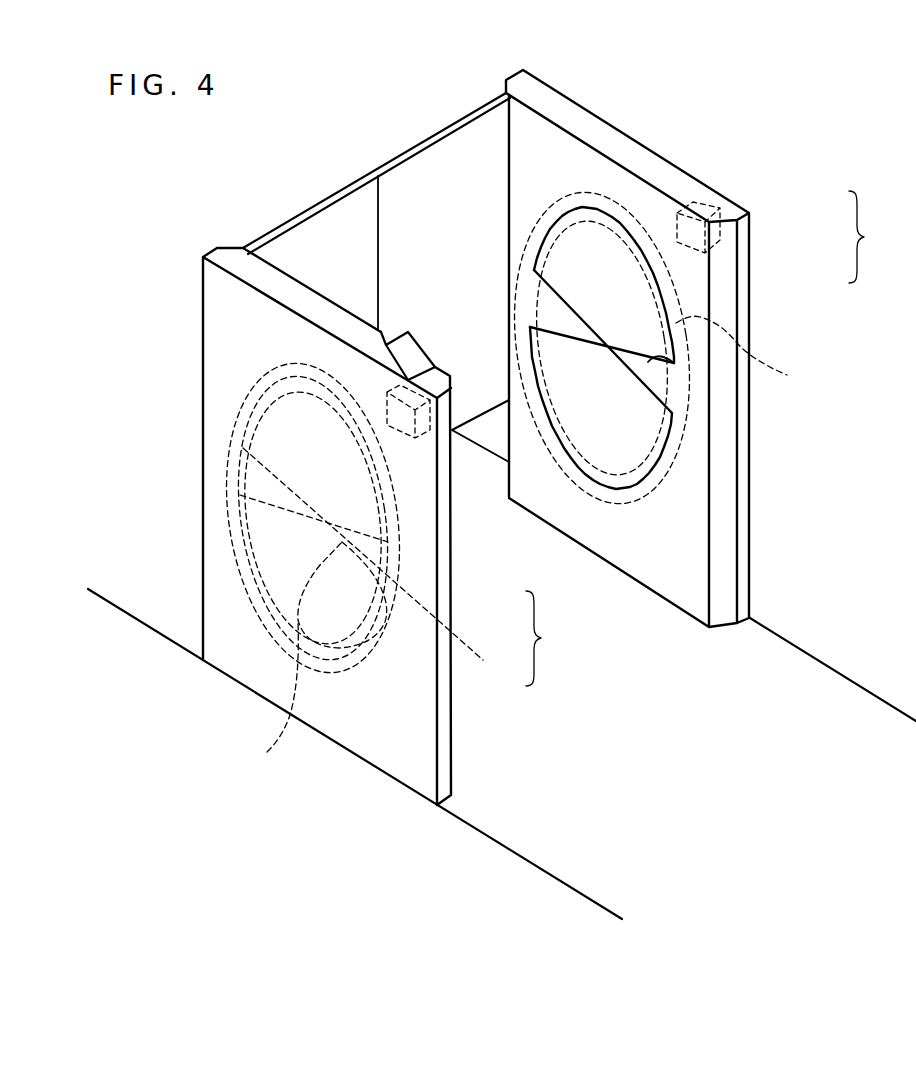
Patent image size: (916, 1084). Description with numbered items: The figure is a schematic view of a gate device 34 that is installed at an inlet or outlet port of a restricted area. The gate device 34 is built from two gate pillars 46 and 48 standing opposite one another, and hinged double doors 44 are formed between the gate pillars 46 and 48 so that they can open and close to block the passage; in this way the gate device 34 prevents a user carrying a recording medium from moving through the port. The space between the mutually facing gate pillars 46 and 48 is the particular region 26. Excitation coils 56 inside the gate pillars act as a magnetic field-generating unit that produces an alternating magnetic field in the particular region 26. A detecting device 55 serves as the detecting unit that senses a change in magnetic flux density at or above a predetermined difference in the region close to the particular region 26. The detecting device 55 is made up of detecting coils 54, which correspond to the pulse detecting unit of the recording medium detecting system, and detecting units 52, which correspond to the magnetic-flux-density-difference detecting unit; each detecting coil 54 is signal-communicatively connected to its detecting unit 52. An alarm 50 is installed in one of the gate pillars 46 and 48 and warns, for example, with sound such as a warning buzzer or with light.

The particular region 26 is at (622, 612).
The gate device 34 is at (482, 437).
The hinged double doors 44 is at (352, 220).
The gate pillar 46 is at (223, 357).
The gate pillar 48 is at (592, 170).
The alarm 50 is at (414, 357).
The detecting unit 52 is at (430, 437).
The detecting coil 54 is at (663, 293).
The detecting device 55 is at (712, 438).
The excitation coil 56 is at (350, 670).